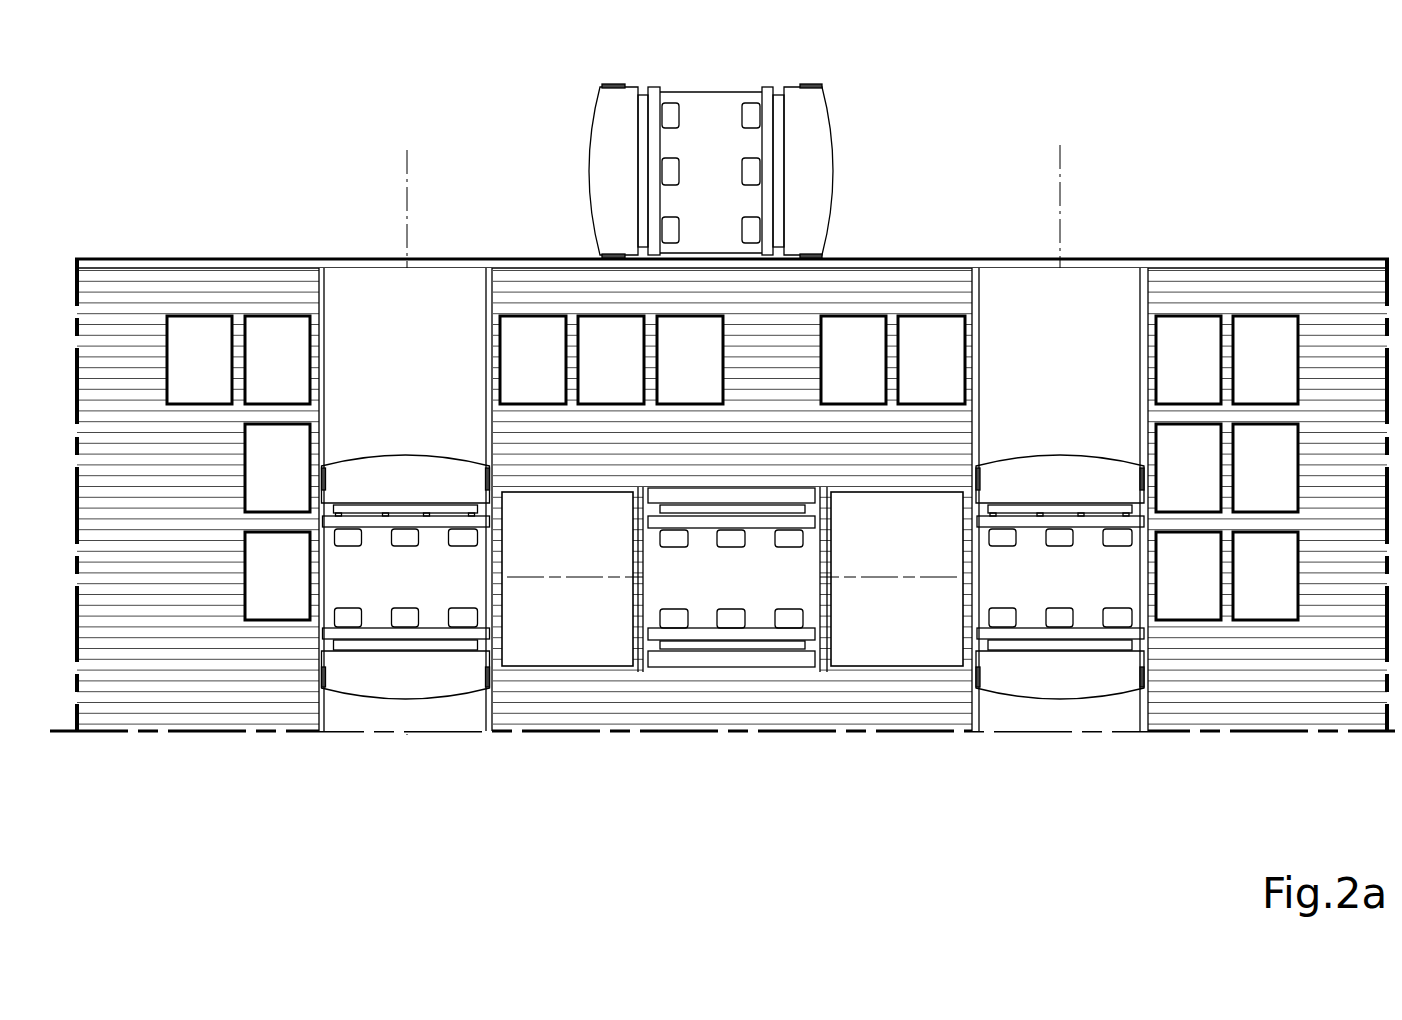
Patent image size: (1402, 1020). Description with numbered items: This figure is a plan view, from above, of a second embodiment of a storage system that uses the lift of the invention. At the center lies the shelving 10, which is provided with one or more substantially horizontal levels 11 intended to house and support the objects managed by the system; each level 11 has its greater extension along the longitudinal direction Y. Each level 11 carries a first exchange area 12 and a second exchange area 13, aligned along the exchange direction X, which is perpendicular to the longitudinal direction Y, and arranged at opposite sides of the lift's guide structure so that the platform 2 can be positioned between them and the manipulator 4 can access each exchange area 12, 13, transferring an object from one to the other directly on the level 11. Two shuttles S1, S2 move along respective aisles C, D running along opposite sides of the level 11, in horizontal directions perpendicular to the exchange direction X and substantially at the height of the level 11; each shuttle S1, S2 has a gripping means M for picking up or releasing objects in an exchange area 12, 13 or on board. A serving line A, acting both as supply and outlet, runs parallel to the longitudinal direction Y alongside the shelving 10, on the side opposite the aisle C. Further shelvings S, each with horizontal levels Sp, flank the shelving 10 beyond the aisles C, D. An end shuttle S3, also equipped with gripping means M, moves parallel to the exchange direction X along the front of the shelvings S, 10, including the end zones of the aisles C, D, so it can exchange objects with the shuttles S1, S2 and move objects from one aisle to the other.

The platform 2 is at (758, 588).
The manipulator 4 is at (766, 530).
The shelving 10 is at (933, 235).
The level 11 is at (530, 290).
The first exchange area 12 is at (567, 579).
The second exchange area 13 is at (897, 579).
The serving line A is at (732, 685).
The aisle C is at (405, 499).
The aisle D is at (1060, 499).
The gripping means M is at (668, 130).
The further shelving S is at (182, 236).
The level Sp is at (117, 328).
The shuttle S1 is at (396, 676).
The shuttle S2 is at (1060, 670).
The end shuttle S3 is at (617, 150).
The exchange direction X is at (734, 568).
The longitudinal direction Y is at (719, 425).